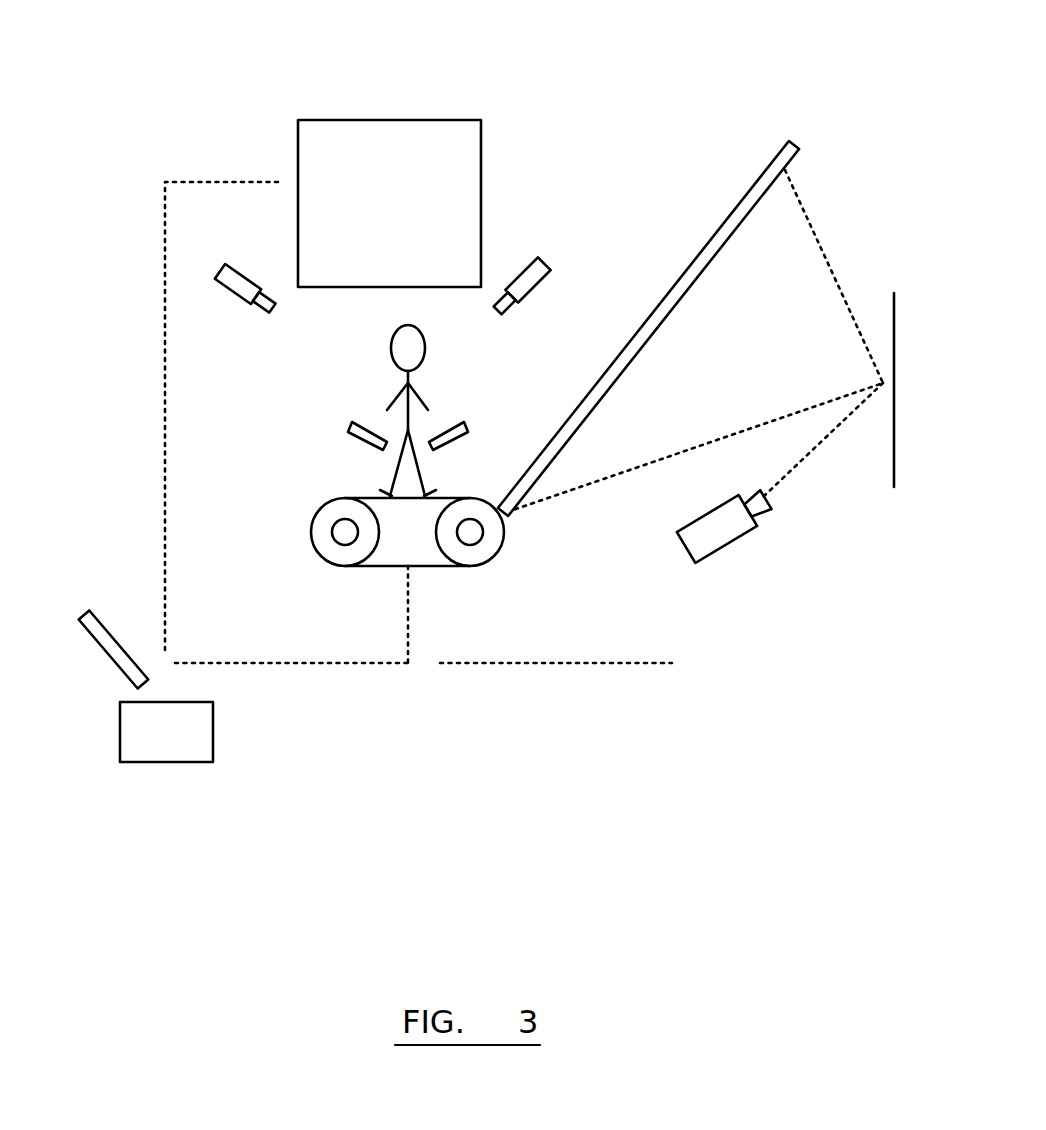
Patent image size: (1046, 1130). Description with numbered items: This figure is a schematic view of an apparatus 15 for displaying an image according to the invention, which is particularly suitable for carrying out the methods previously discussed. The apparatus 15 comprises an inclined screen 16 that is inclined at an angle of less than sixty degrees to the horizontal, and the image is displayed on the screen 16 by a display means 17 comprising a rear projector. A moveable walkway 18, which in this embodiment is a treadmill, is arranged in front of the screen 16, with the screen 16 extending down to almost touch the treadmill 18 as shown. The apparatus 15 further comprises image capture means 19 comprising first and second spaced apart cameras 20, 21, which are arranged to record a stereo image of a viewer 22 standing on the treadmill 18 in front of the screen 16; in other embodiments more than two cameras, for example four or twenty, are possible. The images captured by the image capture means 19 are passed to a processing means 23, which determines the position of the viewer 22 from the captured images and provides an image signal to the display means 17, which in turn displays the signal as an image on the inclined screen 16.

The apparatus 15 is at (722, 732).
The inclined screen 16 is at (795, 160).
The display means 17 is at (737, 537).
The moveable walkway 18 is at (472, 567).
The image capture means 19 is at (357, 98).
The first camera 20 is at (240, 266).
The second camera 21 is at (540, 258).
The viewer 22 is at (387, 400).
The processing means 23 is at (150, 748).